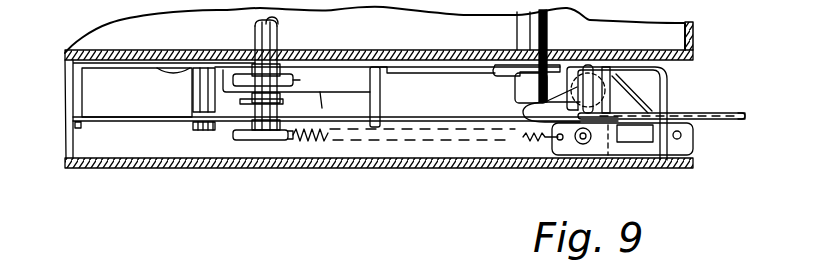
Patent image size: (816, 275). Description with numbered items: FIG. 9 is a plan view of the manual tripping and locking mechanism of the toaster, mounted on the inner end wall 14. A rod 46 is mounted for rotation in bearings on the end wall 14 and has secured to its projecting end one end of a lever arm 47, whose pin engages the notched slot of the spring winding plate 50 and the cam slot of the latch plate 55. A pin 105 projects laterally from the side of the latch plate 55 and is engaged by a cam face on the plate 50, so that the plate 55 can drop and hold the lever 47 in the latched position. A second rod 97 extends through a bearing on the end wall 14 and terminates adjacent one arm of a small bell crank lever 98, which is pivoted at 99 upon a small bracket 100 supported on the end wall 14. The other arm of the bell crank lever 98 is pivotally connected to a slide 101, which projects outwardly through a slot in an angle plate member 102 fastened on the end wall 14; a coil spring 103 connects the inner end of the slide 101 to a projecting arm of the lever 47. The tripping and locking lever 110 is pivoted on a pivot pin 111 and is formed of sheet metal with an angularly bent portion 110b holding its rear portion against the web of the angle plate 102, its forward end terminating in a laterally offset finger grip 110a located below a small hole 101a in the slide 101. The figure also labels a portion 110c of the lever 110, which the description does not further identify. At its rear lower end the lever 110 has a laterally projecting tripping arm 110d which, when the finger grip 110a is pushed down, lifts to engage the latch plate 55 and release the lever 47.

The end wall 14 is at (437, 59).
The rod 46 is at (254, 31).
The lever arm 47 is at (232, 137).
The spring winding plate 50 is at (128, 119).
The latch plate 55 is at (306, 92).
The rod 97 is at (547, 30).
The bell crank lever 98 is at (522, 112).
The pivot 99 is at (590, 67).
The small bracket 100 is at (610, 85).
The slide 101 is at (597, 149).
The hole 101a is at (677, 140).
The angle plate member 102 is at (668, 79).
The coil spring 103 is at (317, 143).
The pin 105 is at (198, 96).
The tripping and locking lever 110 is at (418, 68).
The finger grip 110a is at (756, 138).
The angularly bent portion 110b is at (640, 101).
The vertical arm 110c is at (381, 105).
The tripping arm 110d is at (370, 90).
The pivot pin 111 is at (508, 75).